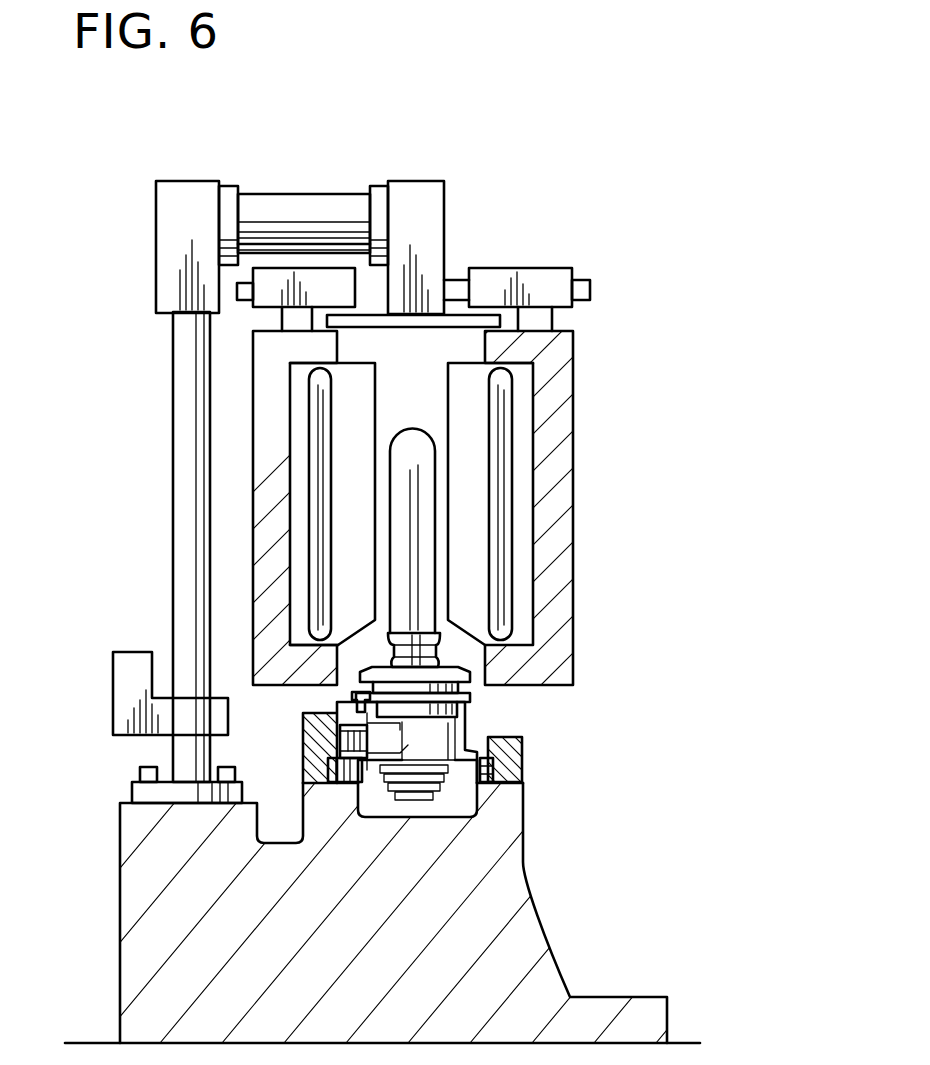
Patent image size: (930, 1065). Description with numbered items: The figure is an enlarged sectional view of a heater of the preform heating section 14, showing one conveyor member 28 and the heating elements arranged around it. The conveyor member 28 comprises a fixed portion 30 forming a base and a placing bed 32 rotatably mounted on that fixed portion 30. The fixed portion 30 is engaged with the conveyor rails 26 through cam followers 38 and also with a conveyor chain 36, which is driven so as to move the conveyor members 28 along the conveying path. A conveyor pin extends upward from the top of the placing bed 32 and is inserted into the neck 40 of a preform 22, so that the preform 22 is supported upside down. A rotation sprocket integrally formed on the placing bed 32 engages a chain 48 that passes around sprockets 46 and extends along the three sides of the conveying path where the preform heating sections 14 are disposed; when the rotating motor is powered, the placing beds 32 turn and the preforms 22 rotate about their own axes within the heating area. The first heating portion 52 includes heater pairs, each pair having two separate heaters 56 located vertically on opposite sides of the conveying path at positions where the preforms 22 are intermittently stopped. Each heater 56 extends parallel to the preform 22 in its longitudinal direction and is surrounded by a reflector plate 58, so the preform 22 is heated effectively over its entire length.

The preform heating section 14 is at (481, 256).
The preform 22 is at (425, 520).
The conveyor rail 26 is at (522, 740).
The conveyor member 28 is at (492, 698).
The fixed portion 30 is at (442, 723).
The placing bed 32 is at (460, 672).
The conveyor chain 36 is at (307, 733).
The cam follower 38 is at (330, 765).
The neck 40 is at (390, 650).
The sprocket 46 is at (368, 680).
The chain 48 is at (354, 693).
The first heating portion 52 is at (600, 279).
The heater 56 is at (497, 453).
The reflector plate 58 is at (468, 420).